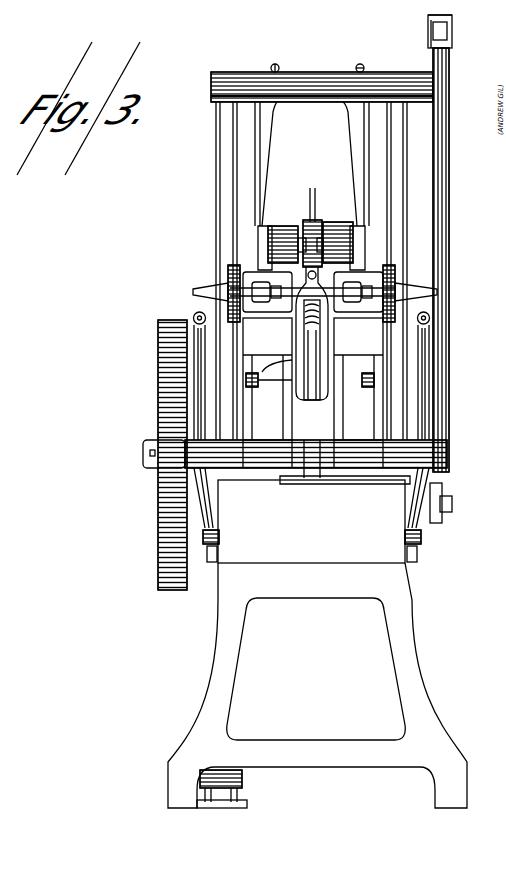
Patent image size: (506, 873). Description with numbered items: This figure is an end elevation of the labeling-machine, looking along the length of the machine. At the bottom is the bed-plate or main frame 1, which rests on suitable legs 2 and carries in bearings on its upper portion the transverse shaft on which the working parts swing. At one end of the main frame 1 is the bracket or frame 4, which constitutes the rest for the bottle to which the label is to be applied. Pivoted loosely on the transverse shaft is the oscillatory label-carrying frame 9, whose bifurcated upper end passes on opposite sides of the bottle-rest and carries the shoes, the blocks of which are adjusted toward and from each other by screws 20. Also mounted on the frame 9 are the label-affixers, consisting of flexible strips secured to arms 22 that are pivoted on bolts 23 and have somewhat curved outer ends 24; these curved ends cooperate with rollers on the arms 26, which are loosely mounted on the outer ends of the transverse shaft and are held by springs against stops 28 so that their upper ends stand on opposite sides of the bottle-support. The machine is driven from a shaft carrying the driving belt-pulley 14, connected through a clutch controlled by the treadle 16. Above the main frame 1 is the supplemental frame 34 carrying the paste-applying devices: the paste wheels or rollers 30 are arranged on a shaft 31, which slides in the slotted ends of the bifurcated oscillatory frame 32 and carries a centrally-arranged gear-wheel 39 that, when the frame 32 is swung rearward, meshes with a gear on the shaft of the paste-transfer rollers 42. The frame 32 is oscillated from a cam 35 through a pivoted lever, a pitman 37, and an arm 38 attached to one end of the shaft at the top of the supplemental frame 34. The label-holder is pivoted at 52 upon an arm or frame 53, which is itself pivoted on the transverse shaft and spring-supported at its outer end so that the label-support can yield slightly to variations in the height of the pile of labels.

The bed-plate or main frame 1 is at (311, 521).
The legs 2 is at (317, 685).
The bracket or frame 4 is at (306, 480).
The oscillatory label-carrying frame 9 is at (350, 346).
The driving belt-pulley 14 is at (175, 555).
The treadle 16 is at (242, 780).
The screws 20 is at (370, 287).
The arms 22 is at (228, 284).
The bolts 23 is at (232, 268).
The curved outer ends 24 is at (193, 292).
The arms 26 is at (197, 351).
The stops 28 is at (203, 535).
The wheels or rollers 30 is at (293, 214).
The shaft 31 is at (313, 242).
The bifurcated oscillatory frame 32 is at (350, 114).
The supplemental frame 34 is at (218, 170).
The cam 35 is at (442, 505).
The pitman 37 is at (440, 222).
The arm 38 is at (416, 70).
The gear-wheel 39 is at (313, 222).
The paste-transfer rollers 42 is at (312, 333).
The pivot 52 is at (246, 380).
The arm or frame 53 is at (260, 414).